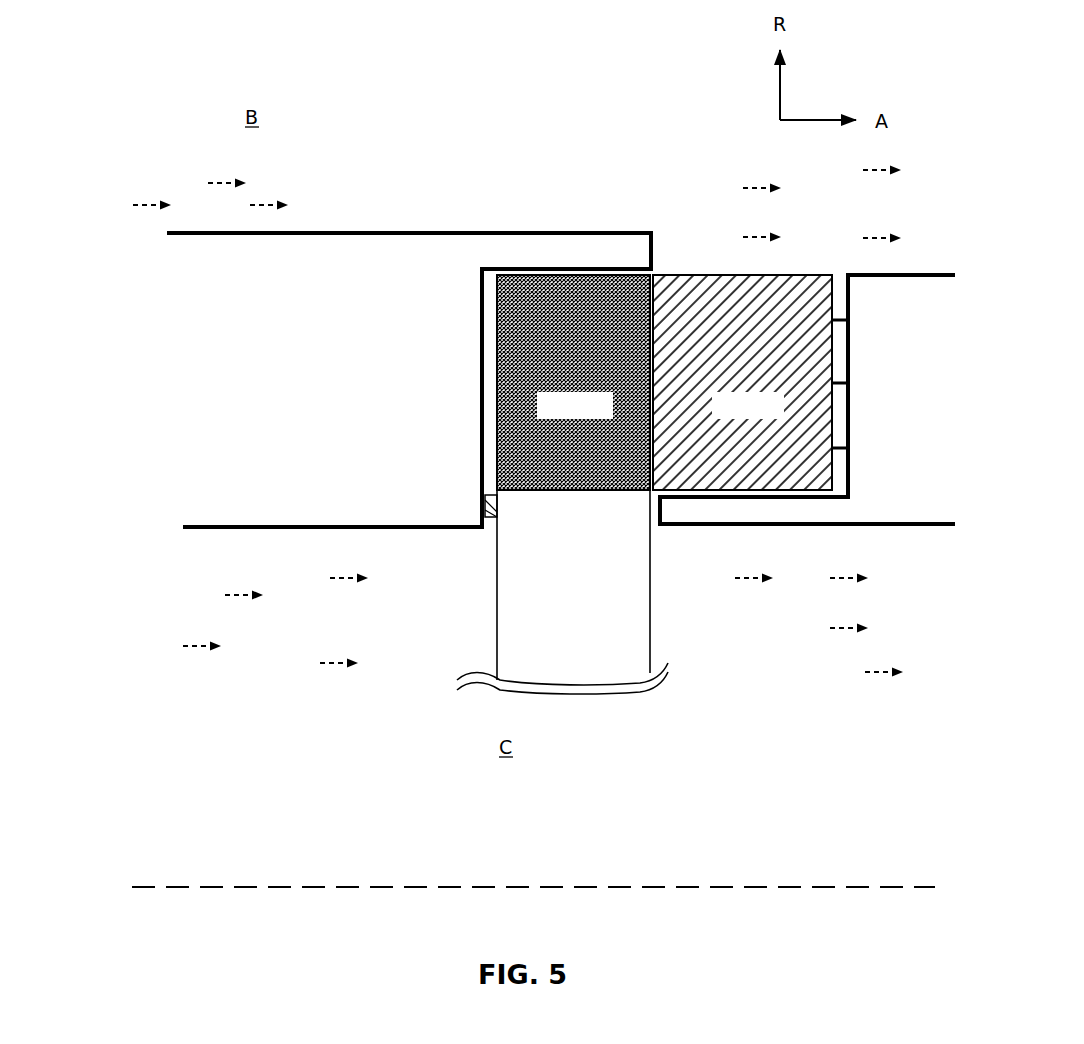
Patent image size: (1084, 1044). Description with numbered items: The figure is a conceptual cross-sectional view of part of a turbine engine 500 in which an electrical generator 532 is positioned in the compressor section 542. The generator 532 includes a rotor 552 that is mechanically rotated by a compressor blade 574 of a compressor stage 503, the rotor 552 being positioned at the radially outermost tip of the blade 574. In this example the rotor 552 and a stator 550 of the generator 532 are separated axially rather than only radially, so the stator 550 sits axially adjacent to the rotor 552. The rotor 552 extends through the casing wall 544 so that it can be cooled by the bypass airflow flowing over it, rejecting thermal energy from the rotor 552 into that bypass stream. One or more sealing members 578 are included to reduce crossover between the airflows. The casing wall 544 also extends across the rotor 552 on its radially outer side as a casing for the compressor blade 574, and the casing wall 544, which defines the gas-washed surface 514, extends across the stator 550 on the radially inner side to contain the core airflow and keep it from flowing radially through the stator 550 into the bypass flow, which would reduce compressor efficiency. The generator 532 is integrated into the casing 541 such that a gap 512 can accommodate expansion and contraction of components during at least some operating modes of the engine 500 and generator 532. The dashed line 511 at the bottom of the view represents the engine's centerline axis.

The turbine engine 500 is at (132, 174).
The casing 541 is at (155, 293).
The gas-washed surface 514 is at (368, 233).
The electrical generator 532 is at (664, 236).
The rotor 552 is at (595, 414).
The stator 550 is at (765, 414).
The casing wall 544 is at (343, 414).
The sealing member 578 is at (482, 522).
The gap 512 is at (487, 548).
The compressor blade 574 is at (595, 604).
The compressor stage 503 is at (685, 685).
The compressor section 542 is at (635, 730).
The engine centerline 511 is at (280, 887).